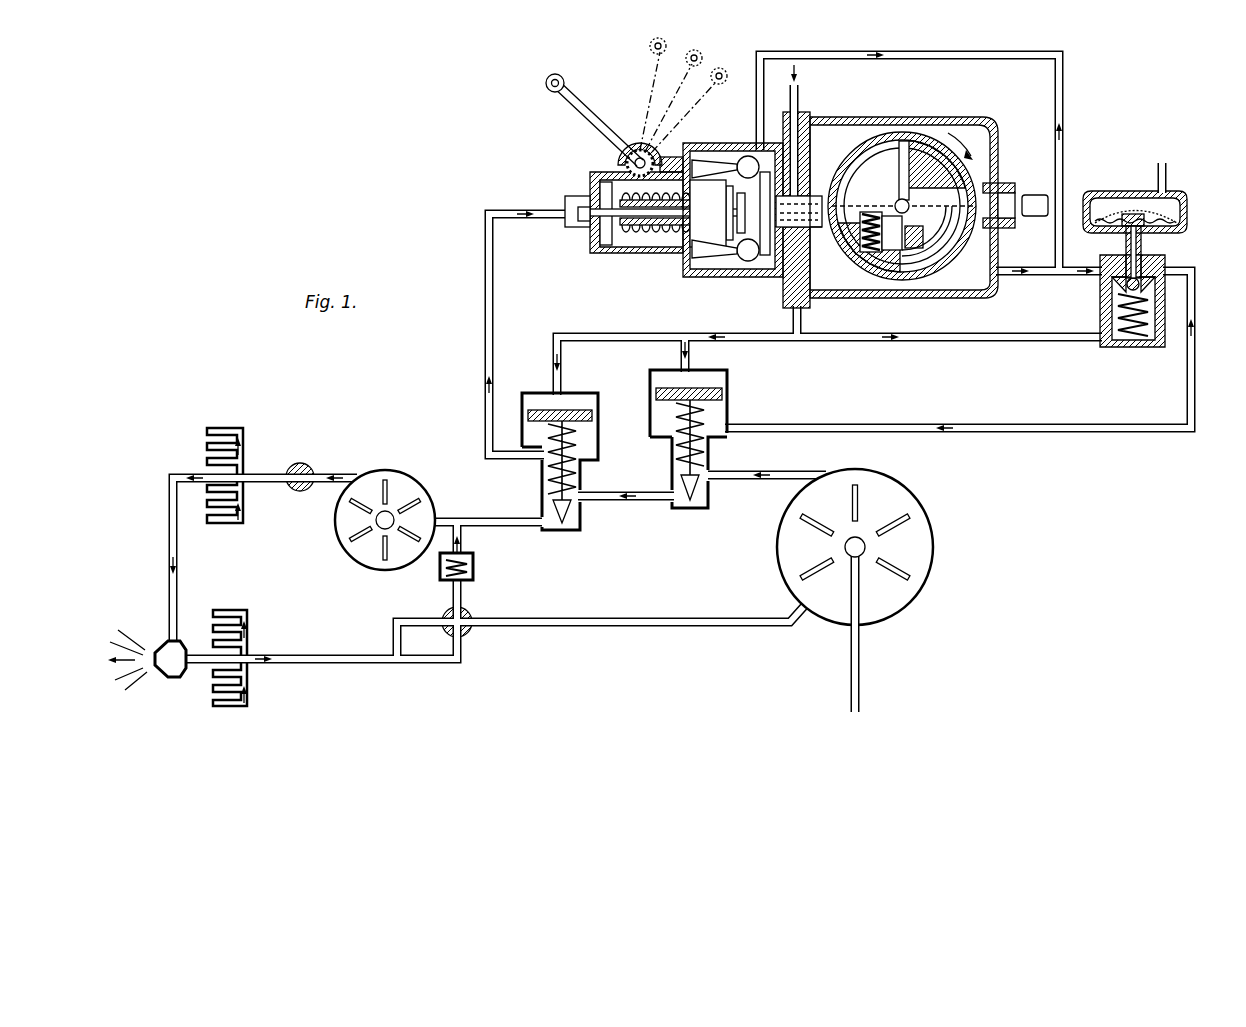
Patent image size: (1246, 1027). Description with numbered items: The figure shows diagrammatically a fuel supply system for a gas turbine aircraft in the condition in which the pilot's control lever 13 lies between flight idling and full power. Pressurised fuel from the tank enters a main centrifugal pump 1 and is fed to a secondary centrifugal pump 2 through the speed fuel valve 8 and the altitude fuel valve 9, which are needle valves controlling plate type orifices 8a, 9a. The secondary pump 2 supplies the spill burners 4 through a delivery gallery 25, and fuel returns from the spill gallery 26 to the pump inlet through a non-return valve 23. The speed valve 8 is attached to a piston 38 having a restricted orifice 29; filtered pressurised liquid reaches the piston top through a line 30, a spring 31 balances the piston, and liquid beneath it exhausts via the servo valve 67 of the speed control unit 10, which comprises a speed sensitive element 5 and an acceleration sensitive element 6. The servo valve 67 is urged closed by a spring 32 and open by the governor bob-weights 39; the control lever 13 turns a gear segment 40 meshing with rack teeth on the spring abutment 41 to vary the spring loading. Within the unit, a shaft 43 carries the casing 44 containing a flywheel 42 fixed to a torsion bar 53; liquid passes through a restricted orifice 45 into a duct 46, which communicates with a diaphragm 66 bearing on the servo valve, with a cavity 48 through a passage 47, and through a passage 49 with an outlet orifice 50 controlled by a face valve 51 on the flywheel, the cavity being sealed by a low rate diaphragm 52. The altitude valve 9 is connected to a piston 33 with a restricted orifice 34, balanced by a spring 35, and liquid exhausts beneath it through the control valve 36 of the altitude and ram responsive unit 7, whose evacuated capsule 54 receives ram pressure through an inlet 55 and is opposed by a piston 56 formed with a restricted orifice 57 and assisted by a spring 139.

The main centrifugal pump 1 is at (890, 490).
The secondary centrifugal pump 2 is at (404, 482).
The spill burners 4 is at (173, 678).
The speed sensitive element 5 is at (706, 143).
The acceleration sensitive element 6 is at (953, 117).
The altitude and ram responsive control unit 7 is at (1098, 191).
The speed fuel valve 8 is at (553, 506).
The plate type orifice 8a is at (581, 514).
The altitude fuel valve 9 is at (681, 481).
The plate type orifice 9a is at (709, 490).
The speed control unit 10 is at (820, 118).
The pilot's control lever 13 is at (575, 102).
The non-return valve 23 is at (474, 558).
The delivery gallery 25 is at (232, 428).
The spill gallery 26 is at (238, 610).
The restricted orifice 29 is at (592, 413).
The line 30 is at (743, 333).
The spring 31 is at (548, 480).
The spring 32 is at (621, 248).
The piston 33 is at (656, 388).
The restricted orifice 34 is at (722, 392).
The spring 35 is at (676, 453).
The control valve 36 is at (1103, 308).
The piston 38 is at (530, 413).
The bob-weights 39 is at (720, 160).
The gear segment 40 is at (652, 154).
The abutment 41 is at (620, 168).
The flywheel 42 is at (955, 240).
The shaft 43 is at (812, 196).
The casing 44 is at (852, 158).
The restricted orifice 45 is at (816, 229).
The duct 46 is at (852, 202).
The passage 47 is at (910, 206).
The cavity 48 is at (899, 165).
The passage 49 is at (882, 230).
The outlet orifice 50 is at (900, 252).
The face valve 51 is at (912, 240).
The diaphragm 52 is at (910, 140).
The torsion bar 53 is at (855, 258).
The evacuated capsule 54 is at (1170, 214).
The inlet 55 is at (1167, 178).
The piston 56 is at (1126, 286).
The restricted orifice 57 is at (1148, 288).
The diaphragm 66 is at (765, 257).
The servo valve 67 is at (575, 196).
The spring 139 is at (1125, 340).